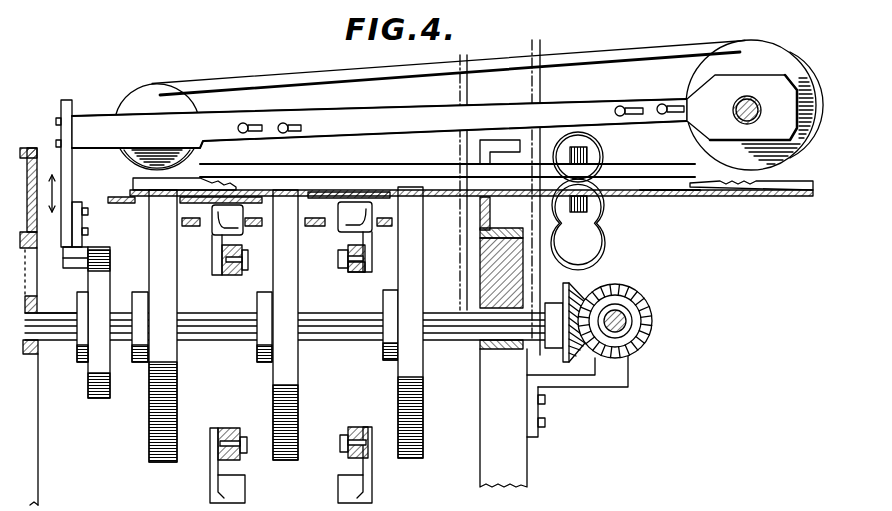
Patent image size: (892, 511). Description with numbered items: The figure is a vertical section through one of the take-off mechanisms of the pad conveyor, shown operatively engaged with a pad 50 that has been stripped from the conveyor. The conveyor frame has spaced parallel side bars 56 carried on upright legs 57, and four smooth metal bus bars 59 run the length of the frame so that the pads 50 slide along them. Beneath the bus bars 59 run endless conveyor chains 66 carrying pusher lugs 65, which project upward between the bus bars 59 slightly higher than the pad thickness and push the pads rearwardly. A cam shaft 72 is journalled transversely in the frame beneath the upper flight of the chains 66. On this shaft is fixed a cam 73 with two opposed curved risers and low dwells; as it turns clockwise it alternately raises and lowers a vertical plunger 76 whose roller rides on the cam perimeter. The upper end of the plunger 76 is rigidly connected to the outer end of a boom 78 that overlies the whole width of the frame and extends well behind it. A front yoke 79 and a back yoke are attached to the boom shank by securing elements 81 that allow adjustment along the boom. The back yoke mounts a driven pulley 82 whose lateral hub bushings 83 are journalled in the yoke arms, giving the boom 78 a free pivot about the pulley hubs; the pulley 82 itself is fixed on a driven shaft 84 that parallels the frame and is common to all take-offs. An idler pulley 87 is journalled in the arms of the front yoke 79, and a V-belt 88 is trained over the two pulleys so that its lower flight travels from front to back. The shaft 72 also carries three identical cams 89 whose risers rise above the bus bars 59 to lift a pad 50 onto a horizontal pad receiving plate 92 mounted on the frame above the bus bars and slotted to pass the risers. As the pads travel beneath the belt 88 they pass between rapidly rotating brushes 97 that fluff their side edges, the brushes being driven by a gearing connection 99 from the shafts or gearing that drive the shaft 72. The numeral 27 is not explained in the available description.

The clutch member 27 is at (106, 258).
The pads 50 is at (345, 176).
The side bars 56 is at (36, 236).
The upright legs 57 is at (40, 490).
The bus bars 59 is at (184, 222).
The pusher lugs 65 is at (228, 228).
The endless conveyor chains 66 is at (356, 274).
The shaft 72 is at (333, 341).
The cam 73 is at (90, 382).
The plunger 76 is at (60, 162).
The boom 78 is at (491, 110).
The yoke 79 is at (95, 117).
The securing elements 81 is at (284, 122).
The driven pulley 82 is at (778, 63).
The hub bushings 83 is at (747, 96).
The driven shaft 84 is at (760, 117).
The idler pulley 87 is at (138, 99).
The V-belt 88 is at (302, 73).
The cams 89 is at (178, 401).
The pad receiving plate 92 is at (671, 190).
The rotary brushes 97 is at (591, 154).
The gearing connection 99 is at (651, 316).